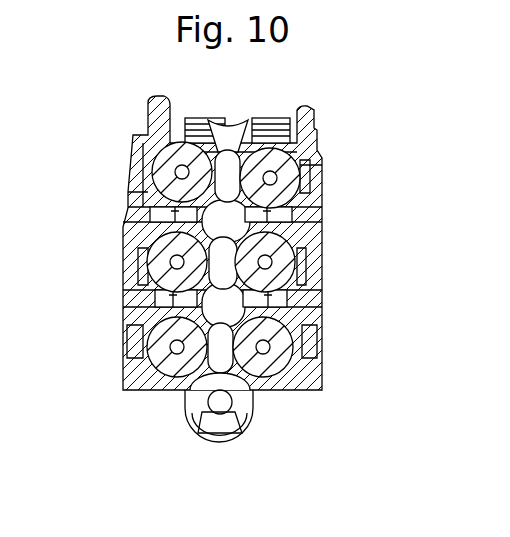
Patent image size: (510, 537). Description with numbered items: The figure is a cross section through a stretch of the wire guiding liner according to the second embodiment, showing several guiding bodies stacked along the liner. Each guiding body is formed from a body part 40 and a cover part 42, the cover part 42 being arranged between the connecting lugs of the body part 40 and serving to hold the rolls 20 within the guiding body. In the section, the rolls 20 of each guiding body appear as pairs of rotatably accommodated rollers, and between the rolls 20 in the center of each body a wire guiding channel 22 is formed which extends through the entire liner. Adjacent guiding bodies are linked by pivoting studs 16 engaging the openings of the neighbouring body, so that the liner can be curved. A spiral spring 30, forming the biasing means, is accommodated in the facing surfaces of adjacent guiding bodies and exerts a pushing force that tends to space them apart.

The pivoting stud 16 is at (135, 135).
The roll 20 is at (286, 183).
The wire guiding channel 22 is at (220, 362).
The spiral spring 30 is at (262, 130).
The body part 40 is at (322, 158).
The cover part 42 is at (320, 218).